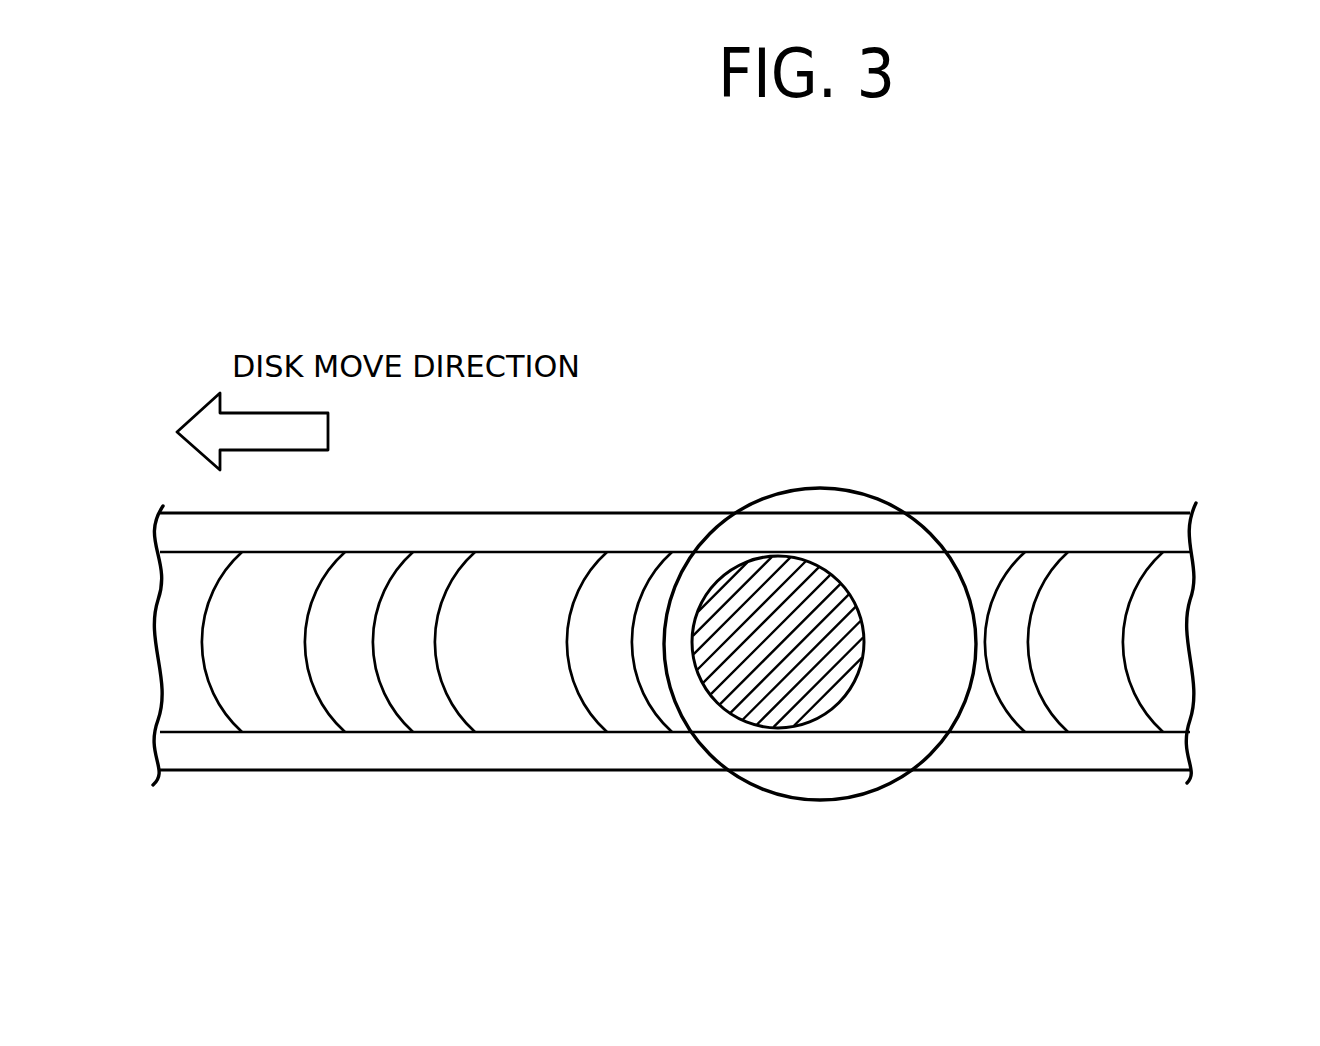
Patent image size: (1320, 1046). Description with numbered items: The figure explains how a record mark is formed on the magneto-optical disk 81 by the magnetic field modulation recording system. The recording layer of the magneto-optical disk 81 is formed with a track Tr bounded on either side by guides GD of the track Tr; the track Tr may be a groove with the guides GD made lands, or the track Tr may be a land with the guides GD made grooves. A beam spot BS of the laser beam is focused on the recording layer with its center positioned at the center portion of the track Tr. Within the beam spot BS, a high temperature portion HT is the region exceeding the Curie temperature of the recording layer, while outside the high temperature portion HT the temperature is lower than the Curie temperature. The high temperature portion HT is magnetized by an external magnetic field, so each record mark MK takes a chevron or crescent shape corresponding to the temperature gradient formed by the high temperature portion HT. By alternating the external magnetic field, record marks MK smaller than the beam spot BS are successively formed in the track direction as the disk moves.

The magneto-optical disk 81 is at (729, 392).
The beam spot BS is at (823, 487).
The guides GD is at (1160, 534).
The track Tr is at (1160, 645).
The record mark MK is at (510, 695).
The high temperature portion HT is at (815, 702).